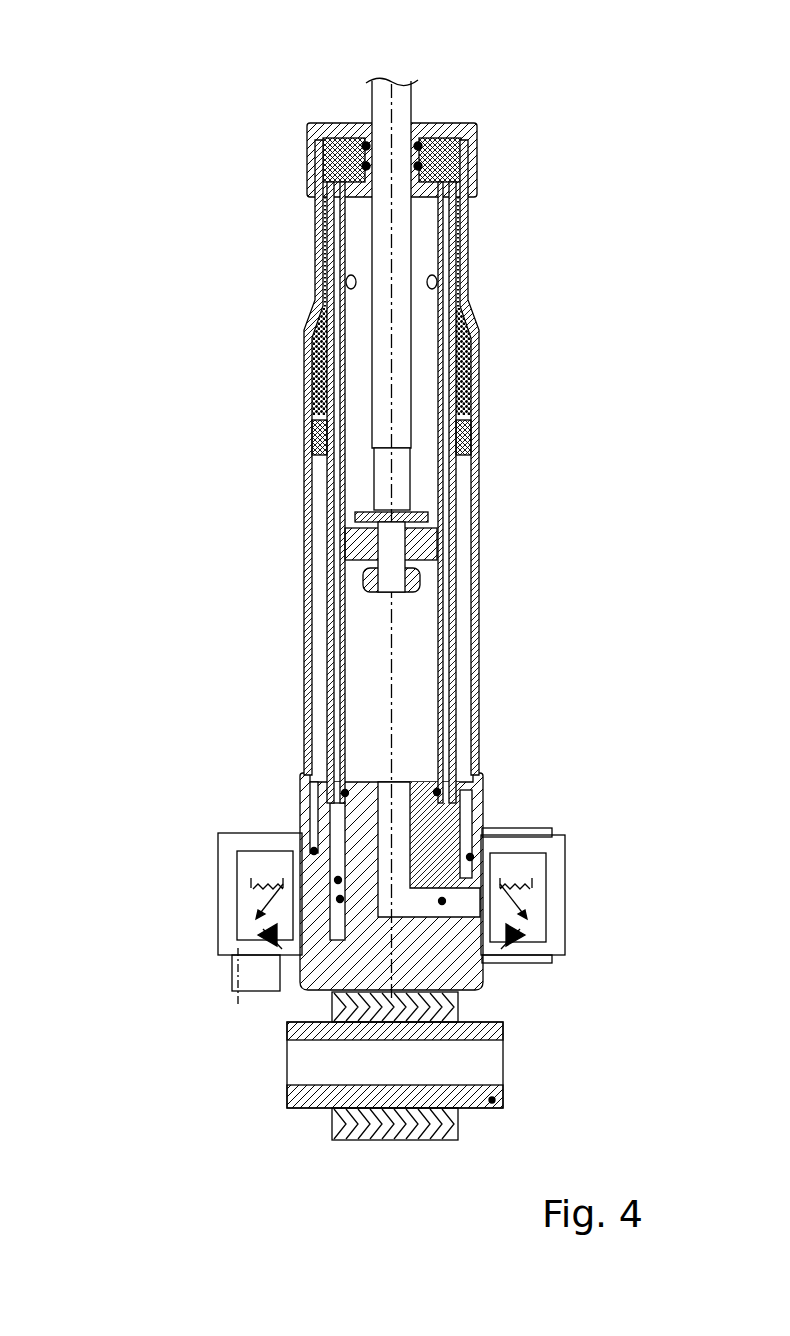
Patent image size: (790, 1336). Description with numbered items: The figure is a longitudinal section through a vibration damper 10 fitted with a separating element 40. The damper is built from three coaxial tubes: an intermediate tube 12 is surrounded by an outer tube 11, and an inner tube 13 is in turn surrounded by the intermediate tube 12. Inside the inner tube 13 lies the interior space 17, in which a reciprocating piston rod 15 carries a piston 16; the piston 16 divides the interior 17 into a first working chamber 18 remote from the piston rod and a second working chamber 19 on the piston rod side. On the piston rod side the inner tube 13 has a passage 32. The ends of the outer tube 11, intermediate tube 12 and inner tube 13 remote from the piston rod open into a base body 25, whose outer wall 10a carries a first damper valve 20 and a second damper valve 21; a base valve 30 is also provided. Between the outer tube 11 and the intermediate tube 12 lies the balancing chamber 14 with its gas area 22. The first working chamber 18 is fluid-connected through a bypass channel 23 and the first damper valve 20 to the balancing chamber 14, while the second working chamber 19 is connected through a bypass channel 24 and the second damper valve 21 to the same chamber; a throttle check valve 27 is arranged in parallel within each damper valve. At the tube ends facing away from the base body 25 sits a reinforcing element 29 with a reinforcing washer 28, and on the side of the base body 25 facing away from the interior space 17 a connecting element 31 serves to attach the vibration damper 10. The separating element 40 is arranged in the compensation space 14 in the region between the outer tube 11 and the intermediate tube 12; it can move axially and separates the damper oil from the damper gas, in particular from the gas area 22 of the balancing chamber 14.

The vibration damper 10 is at (222, 93).
The outer wall 10a is at (484, 958).
The outer tube 11 is at (478, 412).
The intermediate tube 12 is at (466, 471).
The inner tube 13 is at (441, 546).
The balancing chamber 14 is at (319, 396).
The piston rod 15 is at (377, 97).
The piston 16 is at (346, 541).
The interior space 17 is at (391, 492).
The first working chamber 18 is at (372, 681).
The second working chamber 19 is at (354, 336).
The first damper valve 20 is at (579, 818).
The second damper valve 21 is at (204, 814).
The gas area 22 is at (466, 348).
The bypass channel 23 is at (513, 855).
The bypass channel 24 is at (259, 851).
The base body 25 is at (468, 978).
The throttle check valve 27 is at (340, 900).
The reinforcing washer 28 is at (500, 121).
The reinforcing element 29 is at (282, 169).
The base valve 30 is at (243, 1030).
The connecting element 31 is at (492, 1100).
The passage 32 is at (348, 281).
The separating element 40 is at (318, 441).